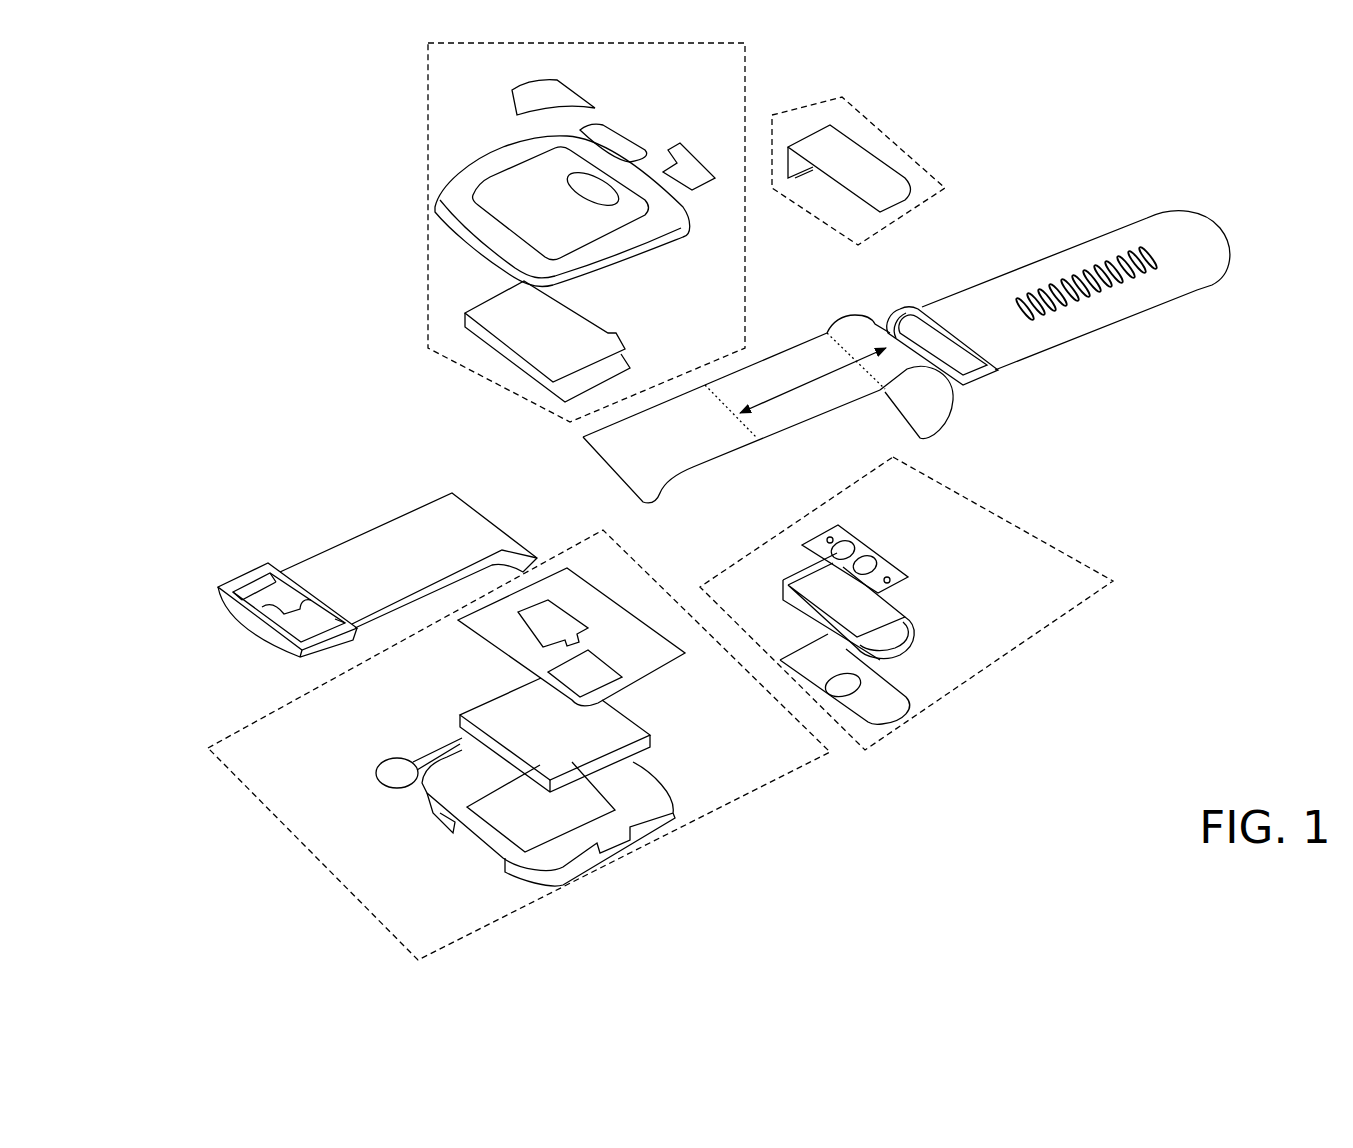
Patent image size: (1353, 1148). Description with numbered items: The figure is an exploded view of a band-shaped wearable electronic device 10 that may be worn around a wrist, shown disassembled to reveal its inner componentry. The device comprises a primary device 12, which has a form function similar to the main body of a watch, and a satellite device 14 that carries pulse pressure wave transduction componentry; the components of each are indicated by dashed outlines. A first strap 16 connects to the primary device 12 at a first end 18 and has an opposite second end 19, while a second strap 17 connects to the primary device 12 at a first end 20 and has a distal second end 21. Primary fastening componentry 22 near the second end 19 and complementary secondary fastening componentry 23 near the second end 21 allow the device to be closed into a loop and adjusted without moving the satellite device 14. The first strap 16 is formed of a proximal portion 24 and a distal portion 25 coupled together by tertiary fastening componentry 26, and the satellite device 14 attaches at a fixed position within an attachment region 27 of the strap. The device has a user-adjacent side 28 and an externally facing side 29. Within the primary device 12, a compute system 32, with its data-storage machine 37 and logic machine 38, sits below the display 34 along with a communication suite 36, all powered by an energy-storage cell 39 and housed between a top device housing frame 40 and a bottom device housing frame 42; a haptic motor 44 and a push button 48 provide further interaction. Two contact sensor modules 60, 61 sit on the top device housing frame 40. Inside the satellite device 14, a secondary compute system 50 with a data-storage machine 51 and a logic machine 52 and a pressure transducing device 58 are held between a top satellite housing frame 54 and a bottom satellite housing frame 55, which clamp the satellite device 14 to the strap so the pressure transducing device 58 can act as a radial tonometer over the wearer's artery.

The wearable electronic device 10 is at (155, 162).
The primary device 12 is at (428, 98).
The satellite device 14 is at (945, 188).
The first strap 16 is at (935, 305).
The second strap 17 is at (375, 573).
The first end 18 is at (768, 420).
The second end 19 is at (1107, 300).
The first end 20 is at (339, 565).
The second end 21 is at (249, 619).
The primary fastening componentry 22 is at (1090, 308).
The secondary fastening componentry 23 is at (291, 668).
The proximal portion 24 is at (768, 395).
The distal portion 25 is at (974, 330).
The tertiary fastening componentry 26 is at (978, 392).
The attachment region 27 is at (804, 391).
The user-adjacent side 28 is at (1082, 377).
The externally facing side 29 is at (1068, 215).
The compute system 32 is at (628, 661).
The display 34 is at (533, 340).
The communication suite 36 is at (585, 650).
The data-storage machine 37 is at (572, 683).
The logic machine 38 is at (535, 636).
The energy-storage cell 39 is at (540, 750).
The top device housing frame 40 is at (535, 285).
The bottom device housing frame 42 is at (625, 810).
The haptic motor 44 is at (373, 776).
The push button 48 is at (617, 126).
The secondary compute system 50 is at (884, 547).
The data-storage machine 51 is at (852, 538).
The logic machine 52 is at (872, 551).
The top satellite housing frame 54 is at (849, 181).
The bottom satellite housing frame 55 is at (865, 713).
The pressure transducing device 58 is at (825, 617).
The contact sensor module 60 is at (553, 77).
The contact sensor module 61 is at (680, 143).